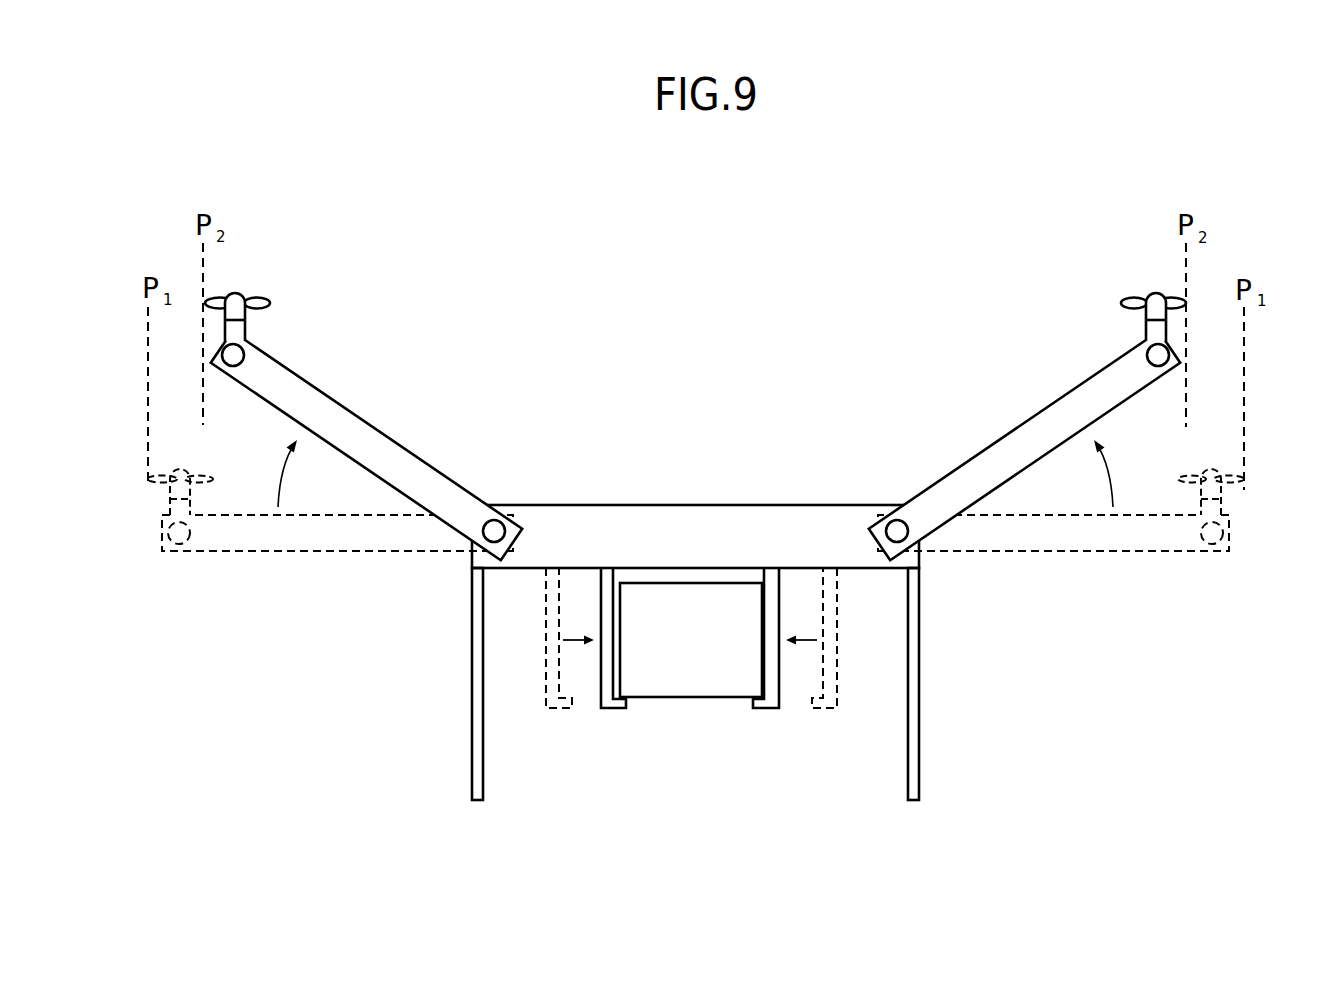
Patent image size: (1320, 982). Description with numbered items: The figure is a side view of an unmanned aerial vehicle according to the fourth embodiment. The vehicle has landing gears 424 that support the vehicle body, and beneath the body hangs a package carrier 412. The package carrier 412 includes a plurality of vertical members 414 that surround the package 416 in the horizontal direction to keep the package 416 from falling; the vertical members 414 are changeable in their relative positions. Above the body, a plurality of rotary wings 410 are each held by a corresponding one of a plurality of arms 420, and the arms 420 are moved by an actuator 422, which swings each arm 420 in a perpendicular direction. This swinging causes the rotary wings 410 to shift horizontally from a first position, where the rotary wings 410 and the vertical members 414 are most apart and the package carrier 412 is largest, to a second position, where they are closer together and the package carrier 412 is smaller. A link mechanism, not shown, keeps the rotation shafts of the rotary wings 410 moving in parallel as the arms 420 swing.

The rotary wing 410 is at (253, 297).
The package carrier 412 is at (812, 732).
The vertical member 414 is at (610, 701).
The package 416 is at (666, 656).
The arm 420 is at (353, 413).
The actuator 422 is at (678, 505).
The landing gear 424 is at (476, 667).